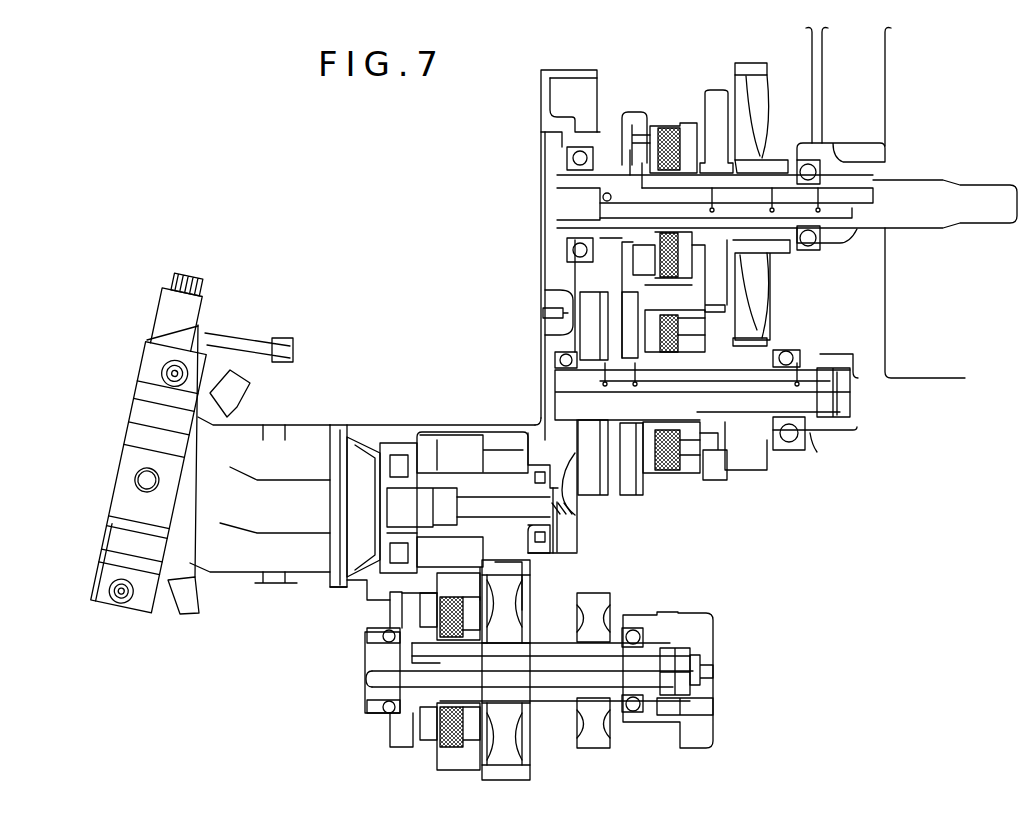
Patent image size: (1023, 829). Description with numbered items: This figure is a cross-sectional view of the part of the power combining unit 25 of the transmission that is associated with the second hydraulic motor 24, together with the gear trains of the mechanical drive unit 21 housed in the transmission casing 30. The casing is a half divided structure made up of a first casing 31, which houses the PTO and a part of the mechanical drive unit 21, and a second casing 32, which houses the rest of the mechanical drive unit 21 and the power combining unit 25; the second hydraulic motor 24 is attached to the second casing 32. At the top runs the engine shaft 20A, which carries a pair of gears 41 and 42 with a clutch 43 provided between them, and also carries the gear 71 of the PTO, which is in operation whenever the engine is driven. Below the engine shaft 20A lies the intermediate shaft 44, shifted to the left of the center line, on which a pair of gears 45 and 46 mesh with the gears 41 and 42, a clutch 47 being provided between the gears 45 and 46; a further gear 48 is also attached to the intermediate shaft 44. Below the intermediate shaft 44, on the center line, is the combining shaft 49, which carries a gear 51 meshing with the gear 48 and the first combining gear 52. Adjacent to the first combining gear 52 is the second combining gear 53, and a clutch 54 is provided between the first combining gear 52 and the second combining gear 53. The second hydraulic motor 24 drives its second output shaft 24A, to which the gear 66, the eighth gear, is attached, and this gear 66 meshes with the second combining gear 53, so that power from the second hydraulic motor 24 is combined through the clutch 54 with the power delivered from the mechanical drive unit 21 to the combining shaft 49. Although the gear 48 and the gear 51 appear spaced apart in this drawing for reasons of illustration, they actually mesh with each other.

The engine shaft 20A is at (917, 228).
The mechanical drive unit 21 is at (888, 418).
The second hydraulic motor 24 is at (297, 443).
The second output shaft 24A is at (403, 503).
The power combining unit 25 is at (443, 396).
The transmission casing 30 is at (432, 473).
The second casing 32 is at (533, 432).
The first casing 31 is at (797, 450).
The gear 41 is at (718, 92).
The gear 42 is at (632, 112).
The clutch 43 is at (668, 123).
The intermediate shaft 44 is at (753, 417).
The gear 45 is at (720, 480).
The gear 46 is at (635, 495).
The clutch 47 is at (667, 475).
The gear 48 is at (600, 495).
The combining shaft 49 is at (553, 693).
The gear 51 is at (595, 748).
The first combining gear 52 is at (455, 770).
The second combining gear 53 is at (500, 782).
The clutch 54 is at (430, 742).
The gear 66 is at (497, 460).
The gear 71 is at (770, 73).